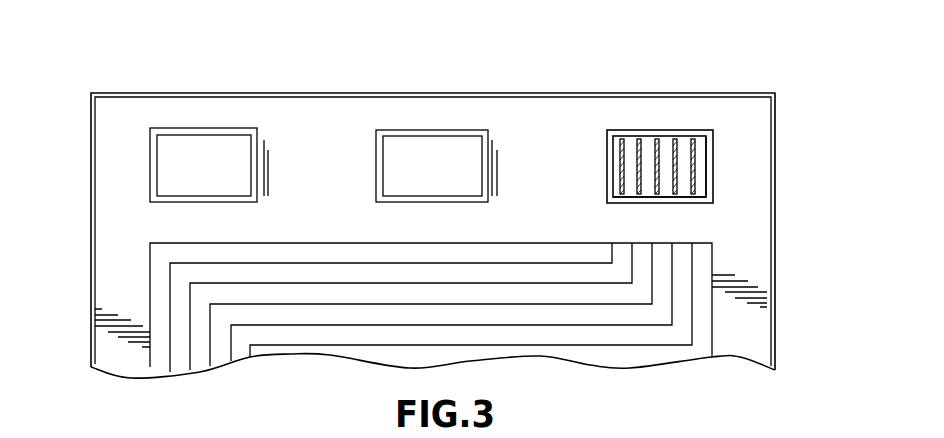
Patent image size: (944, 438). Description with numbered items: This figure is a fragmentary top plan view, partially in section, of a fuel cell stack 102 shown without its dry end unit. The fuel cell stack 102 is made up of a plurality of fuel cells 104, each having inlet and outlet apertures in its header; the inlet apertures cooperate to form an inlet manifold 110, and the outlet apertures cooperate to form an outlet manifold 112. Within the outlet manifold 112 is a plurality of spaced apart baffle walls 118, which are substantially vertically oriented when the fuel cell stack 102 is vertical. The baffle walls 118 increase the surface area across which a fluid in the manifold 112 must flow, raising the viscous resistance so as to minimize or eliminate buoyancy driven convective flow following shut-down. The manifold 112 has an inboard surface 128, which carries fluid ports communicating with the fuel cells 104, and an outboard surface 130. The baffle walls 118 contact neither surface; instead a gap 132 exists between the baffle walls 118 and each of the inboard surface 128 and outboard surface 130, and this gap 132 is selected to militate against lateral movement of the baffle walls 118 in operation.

The fuel cell stack 102 is at (163, 73).
The fuel cells 104 is at (124, 152).
The inlet manifold 110 is at (220, 176).
The outlet manifold 112 is at (632, 130).
The baffle walls 118 is at (622, 178).
The inboard surface 128 is at (633, 200).
The outboard surface 130 is at (683, 135).
The gap 132 is at (714, 145).